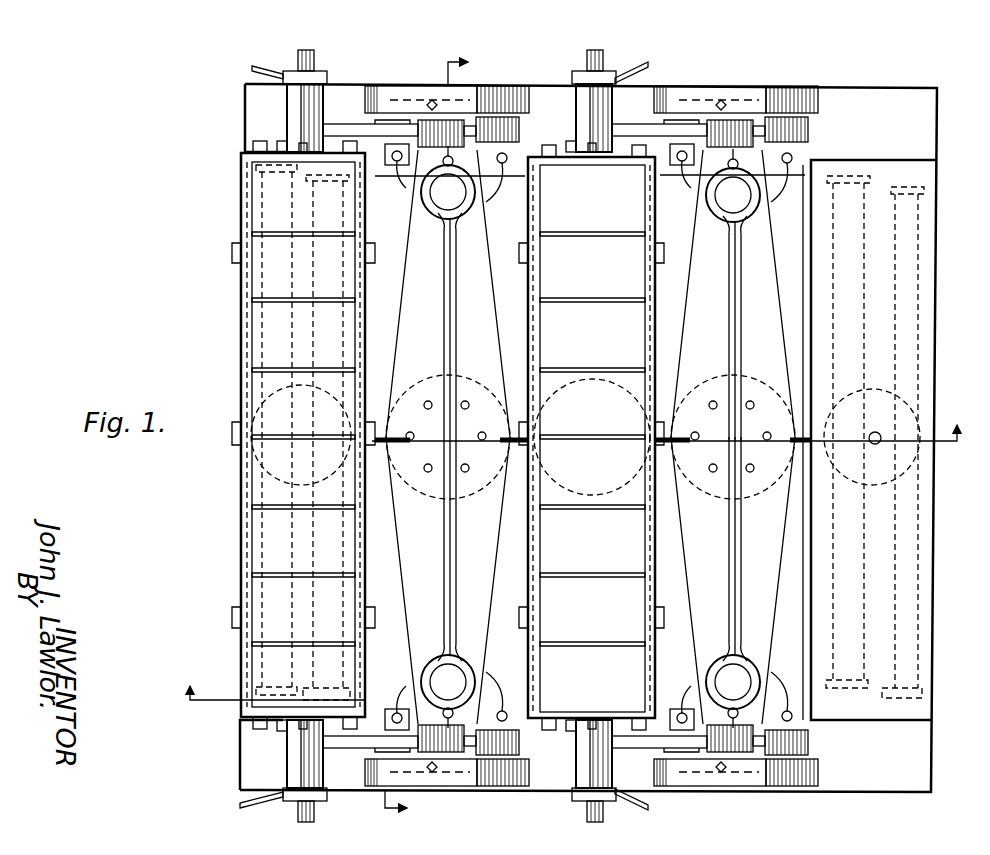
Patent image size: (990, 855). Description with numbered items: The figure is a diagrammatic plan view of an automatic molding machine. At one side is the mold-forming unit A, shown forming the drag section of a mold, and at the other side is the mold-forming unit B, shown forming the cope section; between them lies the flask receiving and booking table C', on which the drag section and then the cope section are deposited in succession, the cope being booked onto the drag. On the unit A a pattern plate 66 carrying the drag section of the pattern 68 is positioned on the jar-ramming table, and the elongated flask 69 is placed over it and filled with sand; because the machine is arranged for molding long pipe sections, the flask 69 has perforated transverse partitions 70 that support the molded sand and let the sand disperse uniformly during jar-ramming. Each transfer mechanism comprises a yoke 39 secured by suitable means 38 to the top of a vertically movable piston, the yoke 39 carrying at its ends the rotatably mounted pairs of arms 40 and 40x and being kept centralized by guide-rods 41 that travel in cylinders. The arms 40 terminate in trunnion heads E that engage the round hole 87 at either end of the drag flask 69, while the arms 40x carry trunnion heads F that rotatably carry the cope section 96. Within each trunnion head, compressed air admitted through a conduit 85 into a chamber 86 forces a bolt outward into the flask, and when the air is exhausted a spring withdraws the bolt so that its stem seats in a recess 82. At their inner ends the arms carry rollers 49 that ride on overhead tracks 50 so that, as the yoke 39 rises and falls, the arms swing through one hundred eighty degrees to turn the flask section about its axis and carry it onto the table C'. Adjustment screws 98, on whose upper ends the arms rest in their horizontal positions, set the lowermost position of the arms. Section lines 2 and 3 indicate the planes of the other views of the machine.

The section line 2- 2 is at (563, 574).
The section line 3- 3 is at (418, 435).
The securing means 38 is at (426, 441).
The yoke 39 is at (446, 377).
The arms 40 is at (298, 128).
The arms 40x is at (647, 133).
The guide-rods 41 is at (770, 670).
The rollers 49 is at (804, 756).
The overhead tracks 50 is at (405, 95).
The pattern plate 66 is at (923, 642).
The pattern 68 is at (310, 592).
The flask 69 is at (243, 332).
The transverse partitions 70 is at (305, 232).
The recesses 82 is at (298, 60).
The conduits 85 is at (252, 69).
The chamber 86 is at (298, 95).
The round hole 87 is at (590, 730).
The cope section 96 is at (657, 338).
The adjustment screws 98 is at (397, 166).
The mold-forming unit A is at (273, 390).
The mold-forming unit B is at (903, 403).
The flask receiving table C' is at (591, 437).
The trunnion heads E is at (298, 107).
The trunnion heads F is at (603, 140).